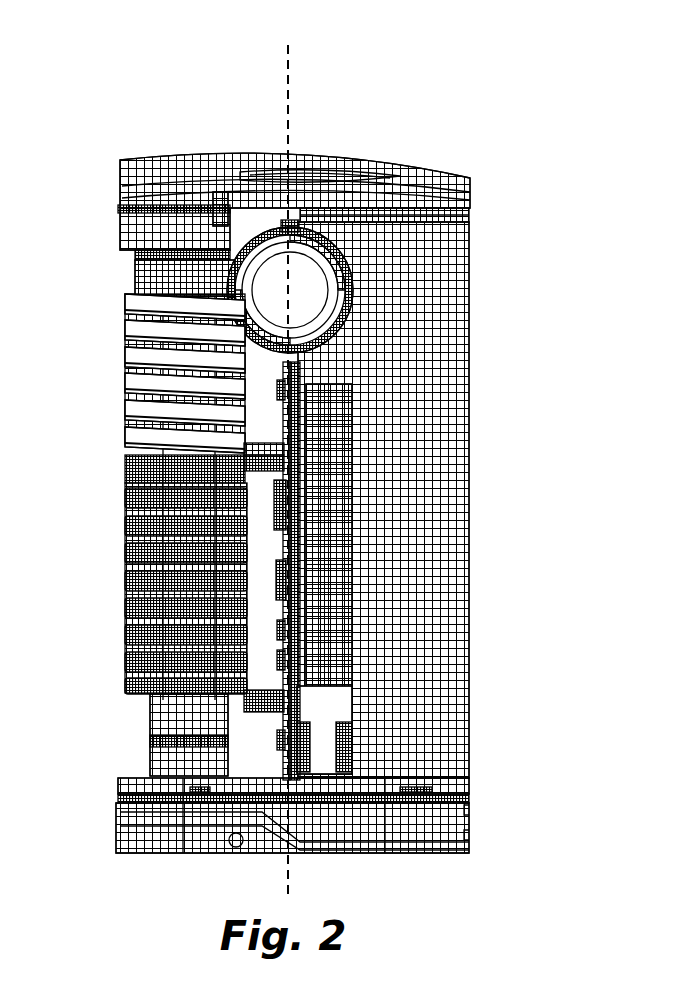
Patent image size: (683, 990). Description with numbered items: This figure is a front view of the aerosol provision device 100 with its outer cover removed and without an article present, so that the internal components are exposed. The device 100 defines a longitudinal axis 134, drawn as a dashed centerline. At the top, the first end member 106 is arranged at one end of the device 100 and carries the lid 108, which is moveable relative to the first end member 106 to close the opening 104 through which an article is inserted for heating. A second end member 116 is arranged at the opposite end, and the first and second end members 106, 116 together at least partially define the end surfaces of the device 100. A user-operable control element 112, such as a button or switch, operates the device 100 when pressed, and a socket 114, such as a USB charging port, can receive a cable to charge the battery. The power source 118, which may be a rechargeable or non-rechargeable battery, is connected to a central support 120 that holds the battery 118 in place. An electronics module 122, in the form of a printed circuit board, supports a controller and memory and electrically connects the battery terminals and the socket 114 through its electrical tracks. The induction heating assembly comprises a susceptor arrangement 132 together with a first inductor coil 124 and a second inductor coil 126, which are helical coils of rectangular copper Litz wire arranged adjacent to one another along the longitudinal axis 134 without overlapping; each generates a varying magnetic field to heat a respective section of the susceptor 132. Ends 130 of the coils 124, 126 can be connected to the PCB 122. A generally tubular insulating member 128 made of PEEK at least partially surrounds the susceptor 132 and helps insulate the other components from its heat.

The aerosol provision device 100 is at (291, 472).
The opening 104 is at (176, 152).
The first end member 106 is at (122, 175).
The lid 108 is at (312, 157).
The user-operable control element 112 is at (312, 272).
The socket/port 114 is at (470, 820).
The second end member 116 is at (120, 846).
The power source 118 is at (460, 540).
The central support 120 is at (332, 452).
The electronics module 122 is at (292, 574).
The first inductor coil 124 is at (126, 394).
The second inductor coil 126 is at (128, 614).
The insulating member 128 is at (130, 278).
The ends of the inductor coils 130 is at (265, 447).
The susceptor arrangement 132 is at (165, 458).
The longitudinal axis 134 is at (288, 68).